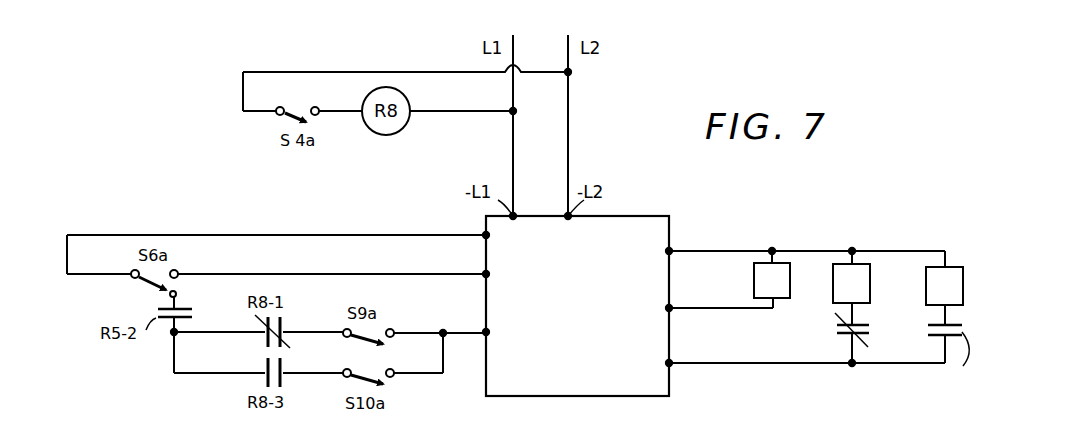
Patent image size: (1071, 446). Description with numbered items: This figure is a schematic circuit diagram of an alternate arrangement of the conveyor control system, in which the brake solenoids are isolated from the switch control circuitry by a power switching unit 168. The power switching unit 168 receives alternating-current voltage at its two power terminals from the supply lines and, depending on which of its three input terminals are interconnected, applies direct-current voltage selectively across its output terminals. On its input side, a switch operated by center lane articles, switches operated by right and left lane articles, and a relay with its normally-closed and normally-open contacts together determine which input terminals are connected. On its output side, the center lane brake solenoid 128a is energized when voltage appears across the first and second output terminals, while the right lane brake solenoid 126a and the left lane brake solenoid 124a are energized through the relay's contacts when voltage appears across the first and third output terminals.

The power switching unit 168 is at (667, 223).
The center lane brake solenoid 128a is at (754, 280).
The right lane brake solenoid 126a is at (833, 272).
The left lane brake solenoid 124a is at (956, 272).